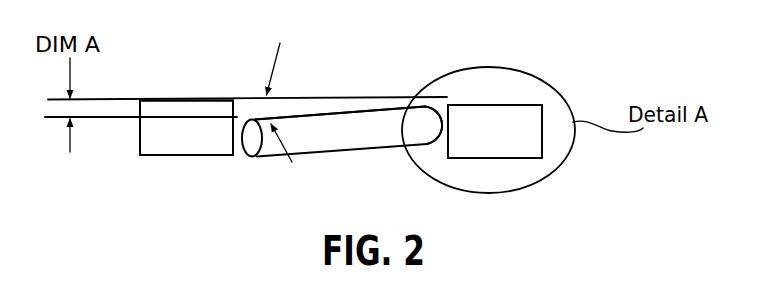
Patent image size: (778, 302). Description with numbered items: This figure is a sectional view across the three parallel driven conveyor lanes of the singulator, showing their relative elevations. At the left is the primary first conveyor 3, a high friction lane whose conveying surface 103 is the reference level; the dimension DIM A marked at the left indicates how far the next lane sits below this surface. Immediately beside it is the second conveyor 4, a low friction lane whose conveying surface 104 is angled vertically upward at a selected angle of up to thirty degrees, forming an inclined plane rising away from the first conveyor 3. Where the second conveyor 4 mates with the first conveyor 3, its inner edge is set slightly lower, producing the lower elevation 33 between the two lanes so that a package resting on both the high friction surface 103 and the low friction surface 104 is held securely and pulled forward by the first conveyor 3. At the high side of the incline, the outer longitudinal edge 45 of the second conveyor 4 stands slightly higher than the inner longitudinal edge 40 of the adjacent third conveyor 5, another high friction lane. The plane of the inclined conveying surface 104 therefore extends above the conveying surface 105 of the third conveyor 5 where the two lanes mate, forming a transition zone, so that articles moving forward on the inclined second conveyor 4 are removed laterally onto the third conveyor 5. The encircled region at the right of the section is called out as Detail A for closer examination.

The first conveyor 3 is at (188, 156).
The lower elevation 33 is at (236, 106).
The conveying surface of the first conveyor 103 is at (182, 100).
The second conveyor 4 is at (277, 158).
The conveying surface of the second conveyor 104 is at (312, 117).
The outer longitudinal edge of the second conveyor 45 is at (436, 100).
The third conveyor 5 is at (532, 105).
The inner longitudinal edge of the third conveyor 40 is at (448, 107).
The conveying surface of the third conveyor 105 is at (485, 105).